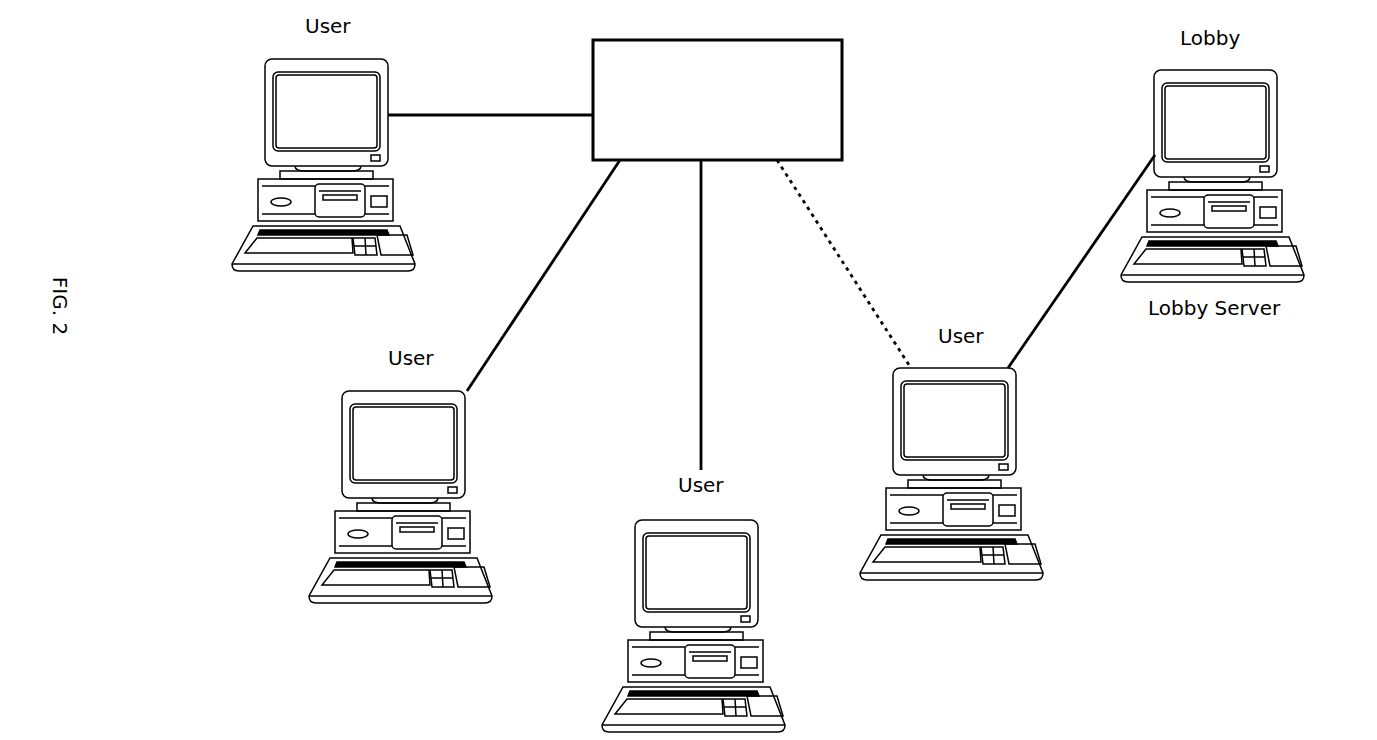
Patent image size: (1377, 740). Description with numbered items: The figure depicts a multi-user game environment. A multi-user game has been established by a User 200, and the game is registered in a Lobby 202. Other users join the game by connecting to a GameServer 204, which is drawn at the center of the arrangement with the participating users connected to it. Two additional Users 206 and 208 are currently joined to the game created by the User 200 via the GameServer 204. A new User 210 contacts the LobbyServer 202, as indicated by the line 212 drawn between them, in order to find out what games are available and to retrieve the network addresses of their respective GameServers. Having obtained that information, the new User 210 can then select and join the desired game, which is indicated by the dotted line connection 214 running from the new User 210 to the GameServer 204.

The User 200 is at (388, 80).
The Lobby 202 is at (1277, 106).
The GameServer 204 is at (842, 85).
The User 206 is at (465, 467).
The User 208 is at (757, 580).
The User 210 is at (1016, 418).
The line 212 is at (1082, 248).
The dotted line connection 214 is at (802, 200).